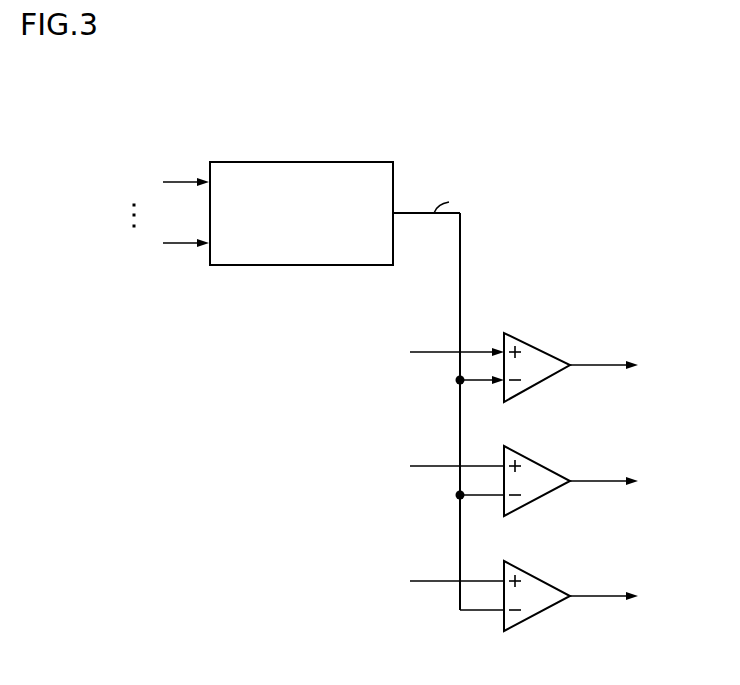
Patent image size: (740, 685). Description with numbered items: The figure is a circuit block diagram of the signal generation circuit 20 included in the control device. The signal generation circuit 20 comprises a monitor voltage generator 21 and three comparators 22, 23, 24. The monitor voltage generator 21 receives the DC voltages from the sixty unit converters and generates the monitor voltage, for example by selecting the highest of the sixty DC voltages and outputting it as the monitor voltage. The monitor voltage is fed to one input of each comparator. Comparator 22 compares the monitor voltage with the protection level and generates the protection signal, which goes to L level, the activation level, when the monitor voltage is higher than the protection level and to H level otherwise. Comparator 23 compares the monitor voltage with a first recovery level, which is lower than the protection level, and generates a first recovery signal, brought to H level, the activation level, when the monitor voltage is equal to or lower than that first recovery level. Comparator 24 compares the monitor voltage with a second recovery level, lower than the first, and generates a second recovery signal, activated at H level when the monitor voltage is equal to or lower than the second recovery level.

The signal generation circuit 20 is at (185, 106).
The monitor voltage generator 21 is at (348, 162).
The comparator 22 is at (538, 345).
The comparator 23 is at (538, 460).
The comparator 24 is at (538, 575).